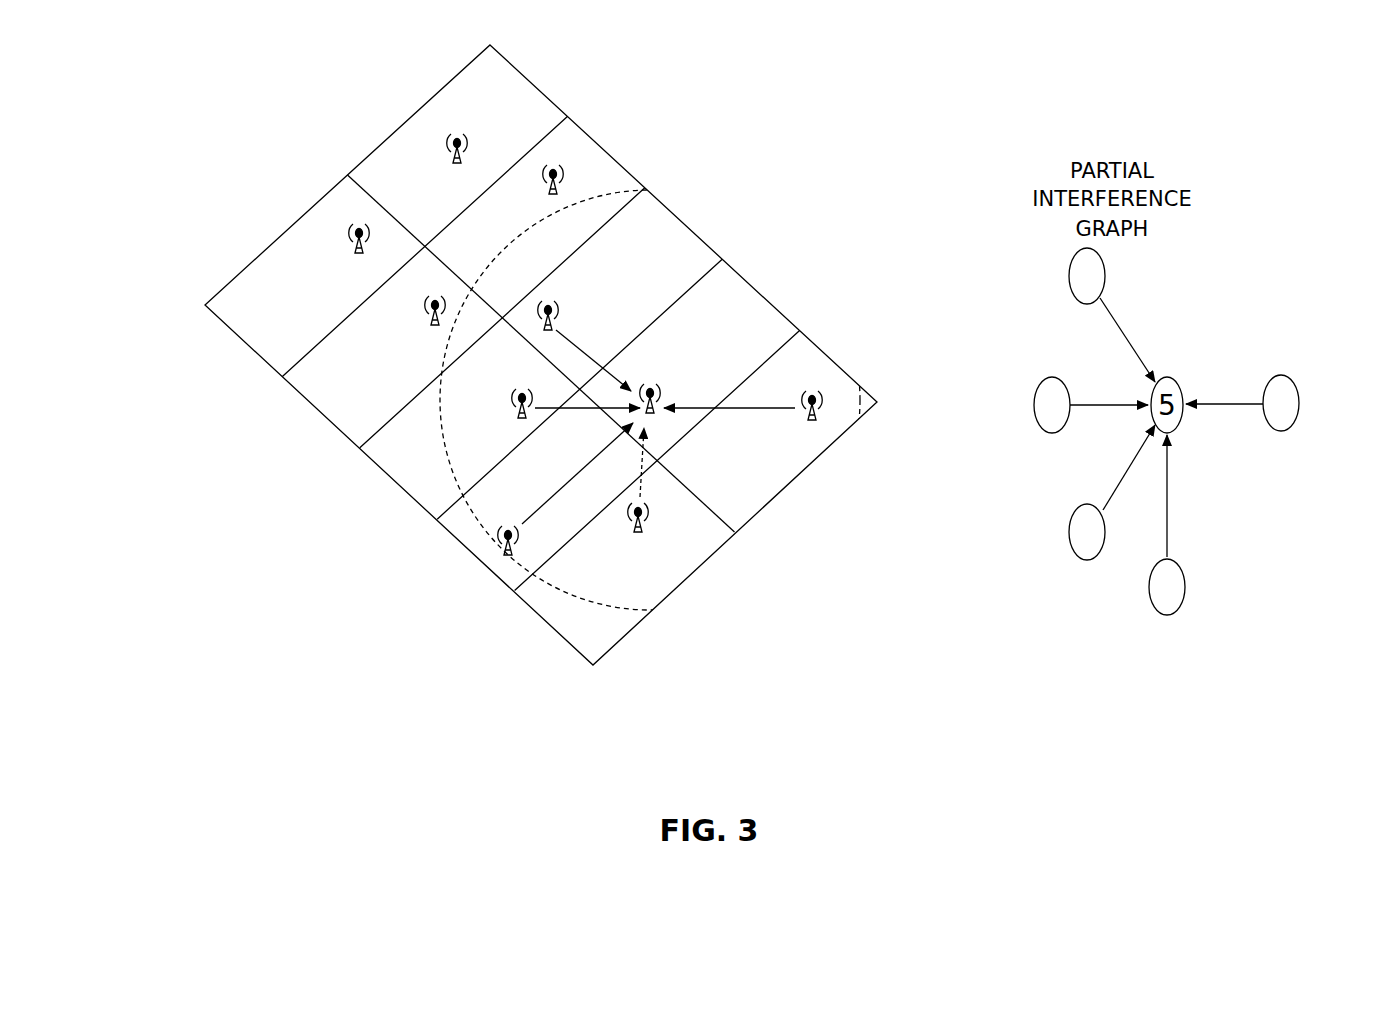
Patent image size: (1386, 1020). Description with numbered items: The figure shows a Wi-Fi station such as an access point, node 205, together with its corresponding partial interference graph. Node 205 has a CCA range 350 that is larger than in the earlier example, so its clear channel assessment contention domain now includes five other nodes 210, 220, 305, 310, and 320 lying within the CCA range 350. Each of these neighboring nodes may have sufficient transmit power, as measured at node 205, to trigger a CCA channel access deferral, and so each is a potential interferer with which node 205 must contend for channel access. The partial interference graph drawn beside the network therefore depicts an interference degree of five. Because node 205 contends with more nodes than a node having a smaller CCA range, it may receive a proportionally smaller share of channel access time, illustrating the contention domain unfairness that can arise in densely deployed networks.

The CCA range 350 is at (623, 166).
The node 305 is at (556, 305).
The node 310 is at (512, 400).
The node 320 is at (510, 545).
The node 210 is at (644, 526).
The node 205 is at (808, 420).
The node 220 is at (659, 388).